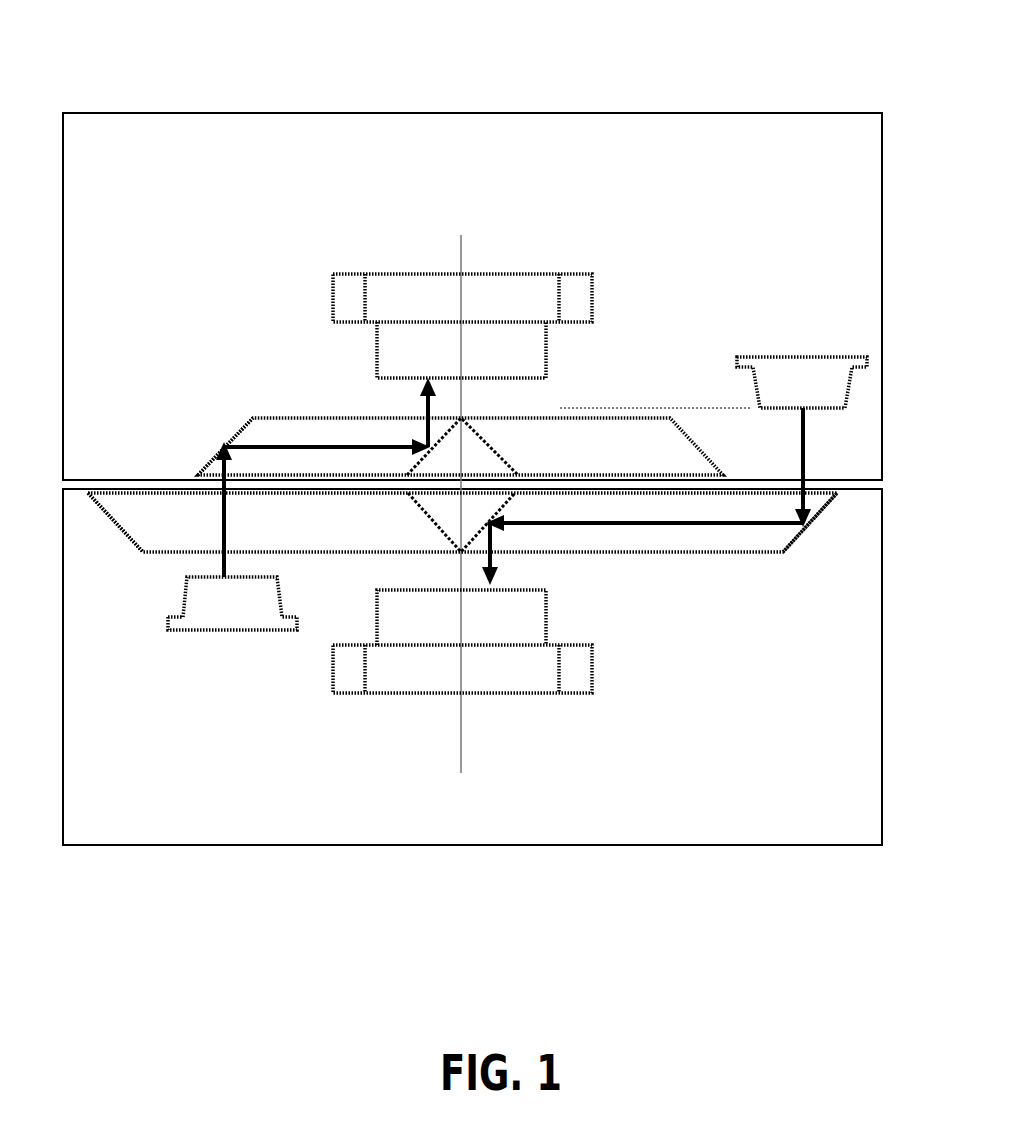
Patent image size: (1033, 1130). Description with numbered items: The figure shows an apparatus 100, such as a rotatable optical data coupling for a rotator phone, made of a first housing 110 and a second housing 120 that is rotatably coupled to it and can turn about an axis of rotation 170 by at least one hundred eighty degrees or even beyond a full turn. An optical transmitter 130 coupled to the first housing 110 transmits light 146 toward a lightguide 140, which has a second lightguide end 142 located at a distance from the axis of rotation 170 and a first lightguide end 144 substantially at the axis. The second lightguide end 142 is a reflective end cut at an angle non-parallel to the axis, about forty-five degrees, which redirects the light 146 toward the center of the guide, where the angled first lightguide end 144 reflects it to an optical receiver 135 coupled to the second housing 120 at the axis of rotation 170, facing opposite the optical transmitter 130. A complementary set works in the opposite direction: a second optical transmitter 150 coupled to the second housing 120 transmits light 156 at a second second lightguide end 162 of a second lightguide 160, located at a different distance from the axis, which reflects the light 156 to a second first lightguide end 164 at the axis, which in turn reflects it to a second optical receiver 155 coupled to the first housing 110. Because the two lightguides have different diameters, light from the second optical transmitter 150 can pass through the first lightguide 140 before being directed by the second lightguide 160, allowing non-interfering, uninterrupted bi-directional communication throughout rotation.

The apparatus 100 is at (764, 54).
The first housing 110 is at (370, 113).
The second housing 120 is at (583, 845).
The optical transmitter 130 is at (808, 357).
The optical receiver 135 is at (392, 693).
The lightguide 140 is at (712, 552).
The second lightguide end 142 is at (783, 545).
The first lightguide end 144 is at (480, 530).
The light 146 is at (803, 445).
The second optical transmitter 150 is at (217, 630).
The second optical receiver 155 is at (511, 274).
The light 156 is at (223, 513).
The second lightguide 160 is at (318, 418).
The second second lightguide end 162 is at (238, 432).
The second first lightguide end 164 is at (482, 421).
The axis of rotation 170 is at (461, 740).